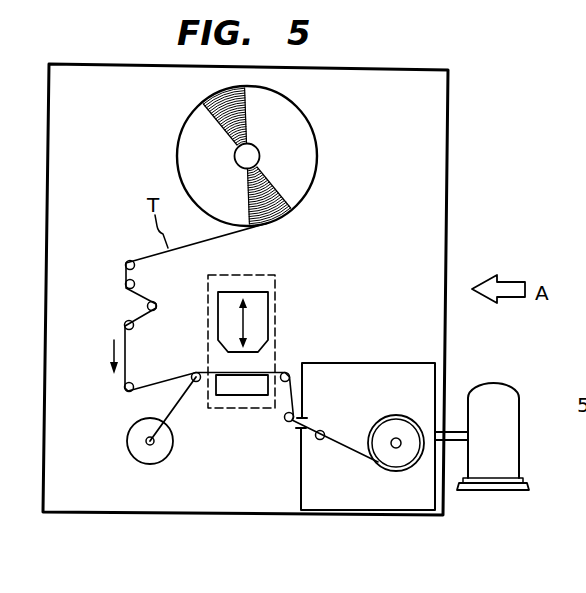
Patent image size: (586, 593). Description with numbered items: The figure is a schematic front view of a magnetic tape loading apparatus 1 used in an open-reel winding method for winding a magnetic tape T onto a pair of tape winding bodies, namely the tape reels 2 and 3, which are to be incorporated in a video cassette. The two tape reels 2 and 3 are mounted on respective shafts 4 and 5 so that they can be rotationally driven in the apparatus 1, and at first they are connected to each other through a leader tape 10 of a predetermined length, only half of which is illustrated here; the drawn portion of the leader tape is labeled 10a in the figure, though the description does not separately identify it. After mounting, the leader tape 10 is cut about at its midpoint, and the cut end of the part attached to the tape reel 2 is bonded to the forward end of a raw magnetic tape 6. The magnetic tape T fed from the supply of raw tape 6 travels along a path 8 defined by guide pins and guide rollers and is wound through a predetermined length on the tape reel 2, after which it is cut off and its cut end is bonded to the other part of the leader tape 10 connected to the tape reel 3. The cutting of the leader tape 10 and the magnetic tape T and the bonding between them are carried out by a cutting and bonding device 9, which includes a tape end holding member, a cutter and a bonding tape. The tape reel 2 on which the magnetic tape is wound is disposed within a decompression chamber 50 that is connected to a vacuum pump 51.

The magnetic tape loading apparatus 1 is at (452, 172).
The tape reel 2 is at (384, 468).
The tape reel 3 is at (127, 438).
The shaft 4 is at (392, 437).
The shaft 5 is at (153, 444).
The raw magnetic tape 6 is at (318, 154).
The path 8 is at (118, 270).
The cutting and bonding device 9 is at (276, 320).
The leader tape 10 is at (181, 399).
The head element 10a is at (250, 388).
The decompression chamber 50 is at (360, 363).
The vacuum pump 51 is at (512, 458).